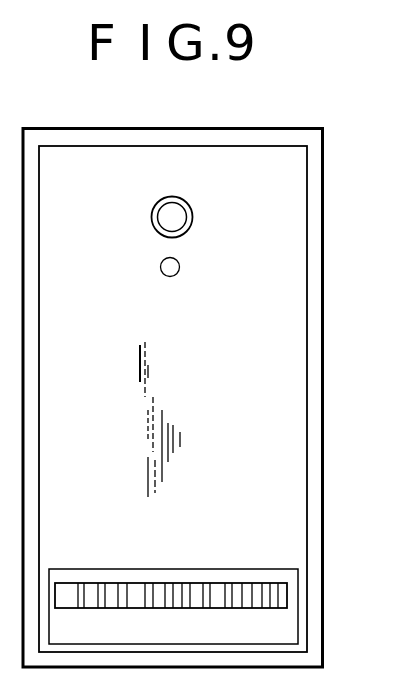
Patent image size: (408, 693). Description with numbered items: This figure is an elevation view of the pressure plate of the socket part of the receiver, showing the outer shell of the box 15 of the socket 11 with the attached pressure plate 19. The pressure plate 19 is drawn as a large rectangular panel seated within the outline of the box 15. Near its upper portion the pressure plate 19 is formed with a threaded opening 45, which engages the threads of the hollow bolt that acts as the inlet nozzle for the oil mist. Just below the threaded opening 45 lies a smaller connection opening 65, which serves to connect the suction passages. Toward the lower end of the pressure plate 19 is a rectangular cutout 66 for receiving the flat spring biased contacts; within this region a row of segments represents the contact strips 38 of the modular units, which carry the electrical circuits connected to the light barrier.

The socket 11 is at (323, 238).
The box 15 is at (317, 322).
The pressure plate 19 is at (290, 415).
The contact strips 38 is at (227, 588).
The threaded opening 45 is at (177, 215).
The connection opening 65 is at (172, 274).
The rectangular cutout 66 is at (298, 615).